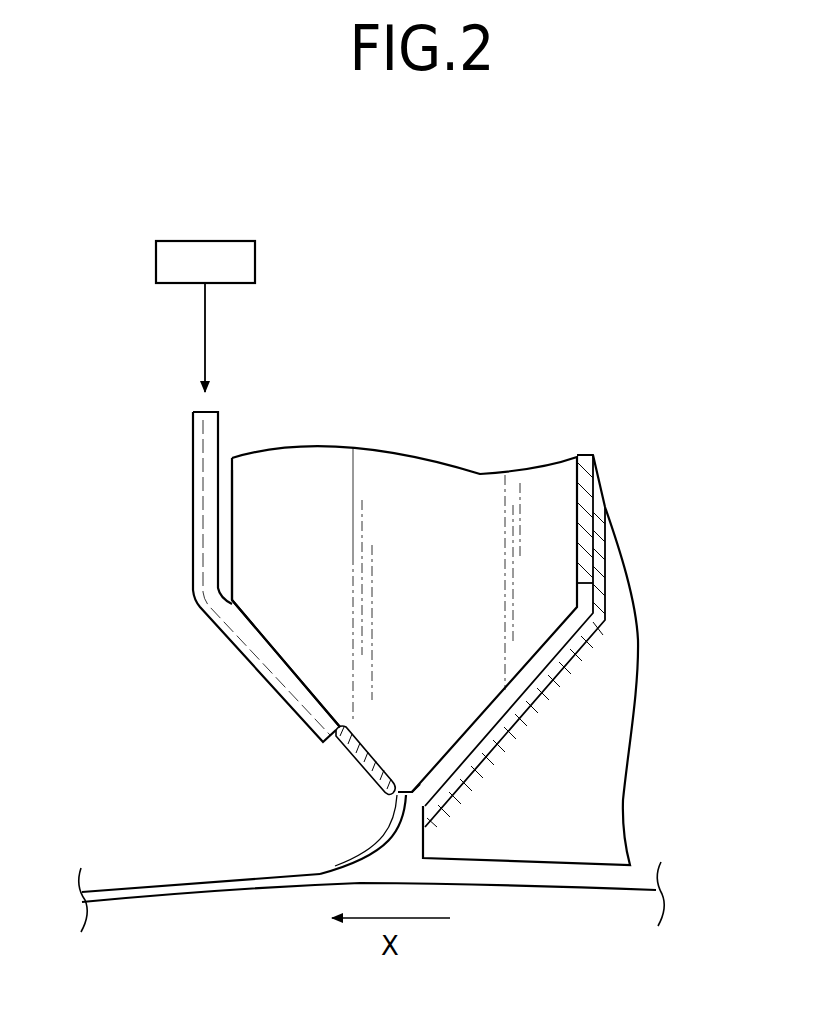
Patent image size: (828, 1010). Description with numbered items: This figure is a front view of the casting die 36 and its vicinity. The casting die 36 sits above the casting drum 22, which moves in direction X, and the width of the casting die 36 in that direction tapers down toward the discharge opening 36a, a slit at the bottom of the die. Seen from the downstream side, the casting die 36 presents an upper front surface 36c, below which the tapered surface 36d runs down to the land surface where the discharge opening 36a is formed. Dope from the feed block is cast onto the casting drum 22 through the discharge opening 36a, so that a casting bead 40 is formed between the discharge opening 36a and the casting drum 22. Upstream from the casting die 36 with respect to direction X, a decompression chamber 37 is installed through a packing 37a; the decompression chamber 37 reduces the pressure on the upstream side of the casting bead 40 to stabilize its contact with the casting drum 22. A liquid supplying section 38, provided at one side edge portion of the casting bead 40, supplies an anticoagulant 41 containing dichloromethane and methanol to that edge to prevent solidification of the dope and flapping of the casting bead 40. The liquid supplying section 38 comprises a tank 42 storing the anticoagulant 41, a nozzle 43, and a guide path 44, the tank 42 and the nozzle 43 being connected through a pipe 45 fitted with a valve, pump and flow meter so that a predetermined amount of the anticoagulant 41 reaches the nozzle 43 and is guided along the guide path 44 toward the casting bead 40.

The casting drum 22 is at (626, 893).
The casting die 36 is at (411, 458).
The discharge opening 36a is at (402, 790).
The front surface 36c is at (232, 543).
The tapered surface 36d is at (283, 662).
The decompression chamber 37 is at (637, 603).
The packing 37a is at (585, 458).
The liquid supplying section 38 is at (127, 512).
The casting bead 40 is at (377, 842).
The anticoagulant 41 is at (347, 730).
The tank 42 is at (207, 243).
The nozzle 43 is at (249, 698).
The guide path 44 is at (345, 760).
The pipe 45 is at (207, 345).